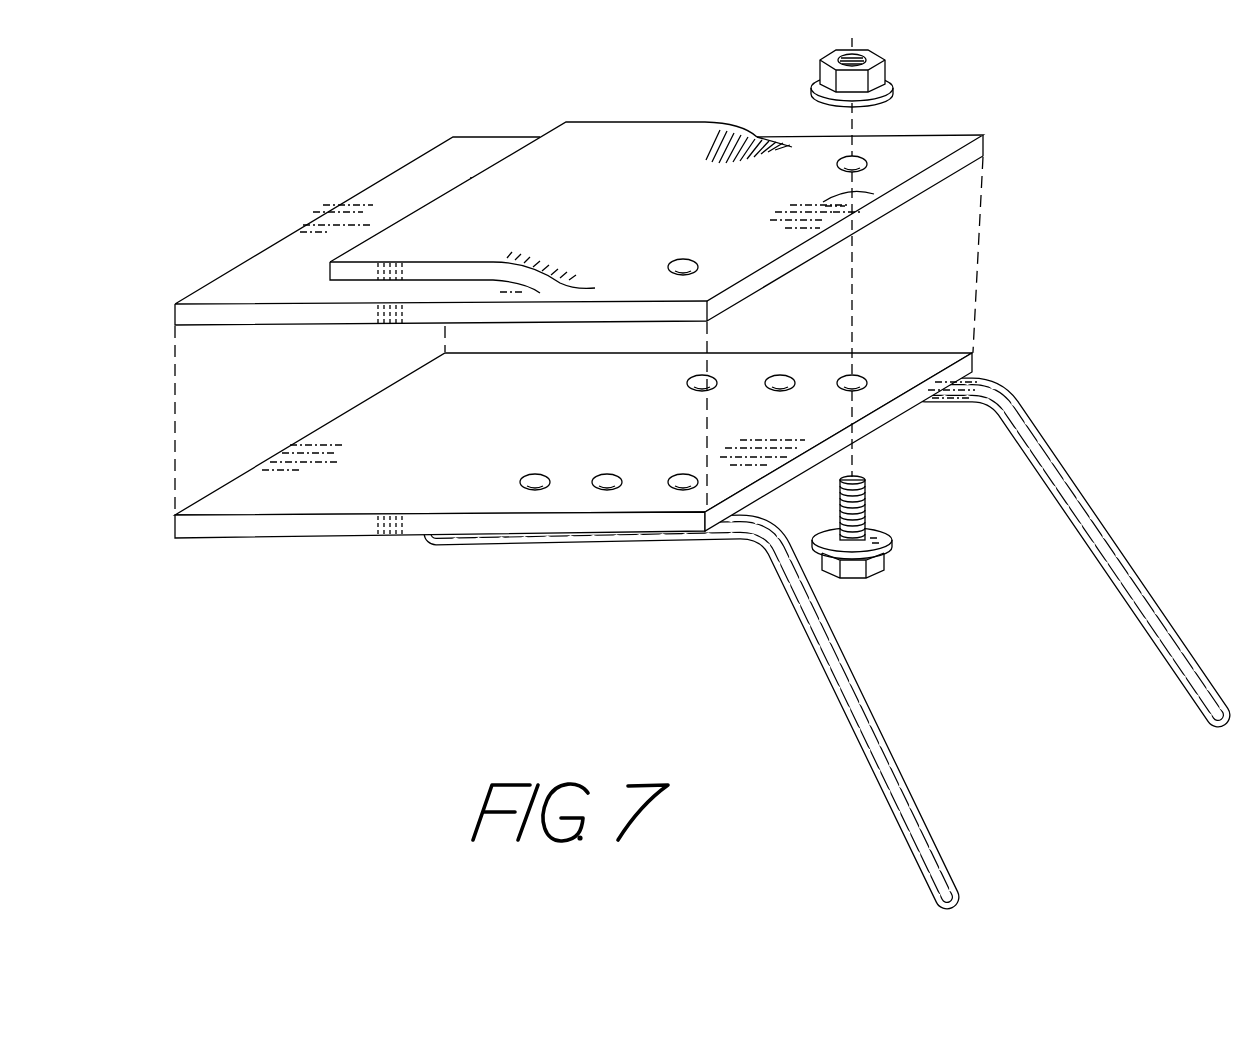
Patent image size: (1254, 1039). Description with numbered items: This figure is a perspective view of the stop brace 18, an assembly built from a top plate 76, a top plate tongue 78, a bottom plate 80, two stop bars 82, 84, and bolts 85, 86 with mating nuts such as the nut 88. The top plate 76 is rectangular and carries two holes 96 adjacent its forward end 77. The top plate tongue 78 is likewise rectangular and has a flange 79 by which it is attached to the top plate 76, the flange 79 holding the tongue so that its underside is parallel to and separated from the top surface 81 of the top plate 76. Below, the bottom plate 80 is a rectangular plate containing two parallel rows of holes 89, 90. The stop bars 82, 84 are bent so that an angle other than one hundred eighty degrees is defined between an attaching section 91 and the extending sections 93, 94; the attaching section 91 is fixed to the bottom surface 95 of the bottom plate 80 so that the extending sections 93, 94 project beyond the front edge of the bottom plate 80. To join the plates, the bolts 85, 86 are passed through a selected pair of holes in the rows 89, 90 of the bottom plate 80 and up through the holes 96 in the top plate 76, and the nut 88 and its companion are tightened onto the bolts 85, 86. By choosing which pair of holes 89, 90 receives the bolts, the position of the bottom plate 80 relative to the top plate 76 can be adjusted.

The stop brace 18 is at (822, 599).
The top plate 76 is at (641, 192).
The forward end 77 is at (812, 262).
The top plate tongue 78 is at (562, 177).
The flange 79 is at (758, 128).
The bottom plate 80 is at (576, 508).
The top surface 81 is at (874, 194).
The stop bar 82 is at (940, 815).
The stop bar 84 is at (1079, 462).
The stop brace bolt 85 is at (865, 510).
The stop brace bolt 86 is at (912, 562).
The stop brace nut 88 is at (887, 73).
The row of holes 89 is at (704, 382).
The row of holes 90 is at (613, 474).
The attaching section 91 is at (558, 545).
The extending section 93 is at (878, 715).
The extending section 94 is at (1160, 610).
The bottom surface 95 is at (407, 538).
The holes 96 is at (860, 157).